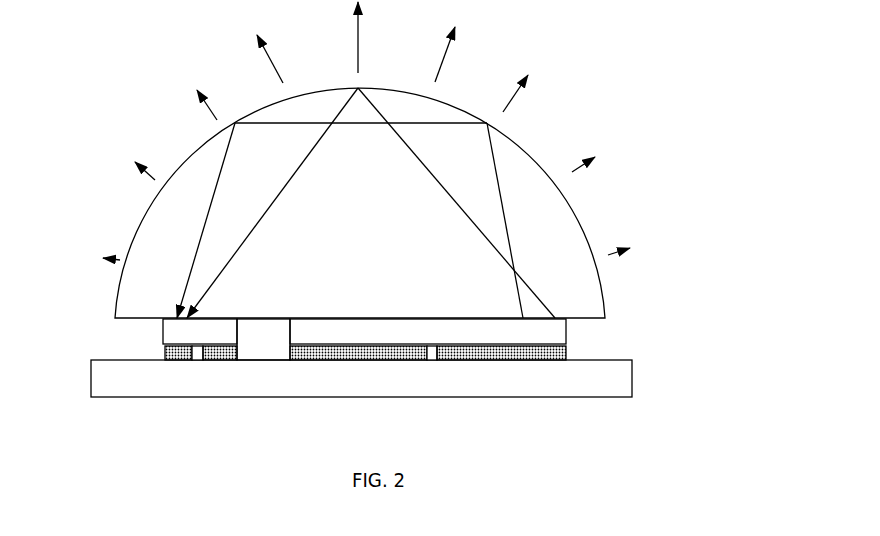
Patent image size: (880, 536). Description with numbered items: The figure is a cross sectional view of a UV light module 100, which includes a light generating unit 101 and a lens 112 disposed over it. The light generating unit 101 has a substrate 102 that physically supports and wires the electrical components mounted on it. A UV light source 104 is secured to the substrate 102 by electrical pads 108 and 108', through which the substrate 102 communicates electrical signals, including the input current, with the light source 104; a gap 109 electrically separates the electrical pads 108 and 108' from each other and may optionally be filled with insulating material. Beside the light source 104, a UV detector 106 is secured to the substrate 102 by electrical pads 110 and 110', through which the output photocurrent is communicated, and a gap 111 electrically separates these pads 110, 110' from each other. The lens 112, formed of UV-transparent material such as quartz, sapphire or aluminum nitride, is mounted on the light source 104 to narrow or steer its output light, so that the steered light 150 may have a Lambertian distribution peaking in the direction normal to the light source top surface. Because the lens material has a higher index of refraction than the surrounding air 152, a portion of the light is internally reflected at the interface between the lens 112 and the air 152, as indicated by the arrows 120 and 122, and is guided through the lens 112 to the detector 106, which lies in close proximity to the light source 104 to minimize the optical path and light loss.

The UV light module 100 is at (103, 53).
The light generating unit 101 is at (429, 363).
The substrate 102 is at (670, 367).
The UV light source 104 is at (350, 324).
The UV detector 106 is at (218, 319).
The electrical pad 108 is at (330, 400).
The electrical pad 108' is at (506, 396).
The gap 109 is at (432, 345).
The electrical pad 110 is at (115, 335).
The electrical pad 110' is at (179, 414).
The gap 111 is at (197, 355).
The lens 112 is at (148, 238).
The arrow 120 is at (293, 172).
The arrow 122 is at (499, 187).
The light 150 is at (528, 88).
The air 152 is at (652, 218).